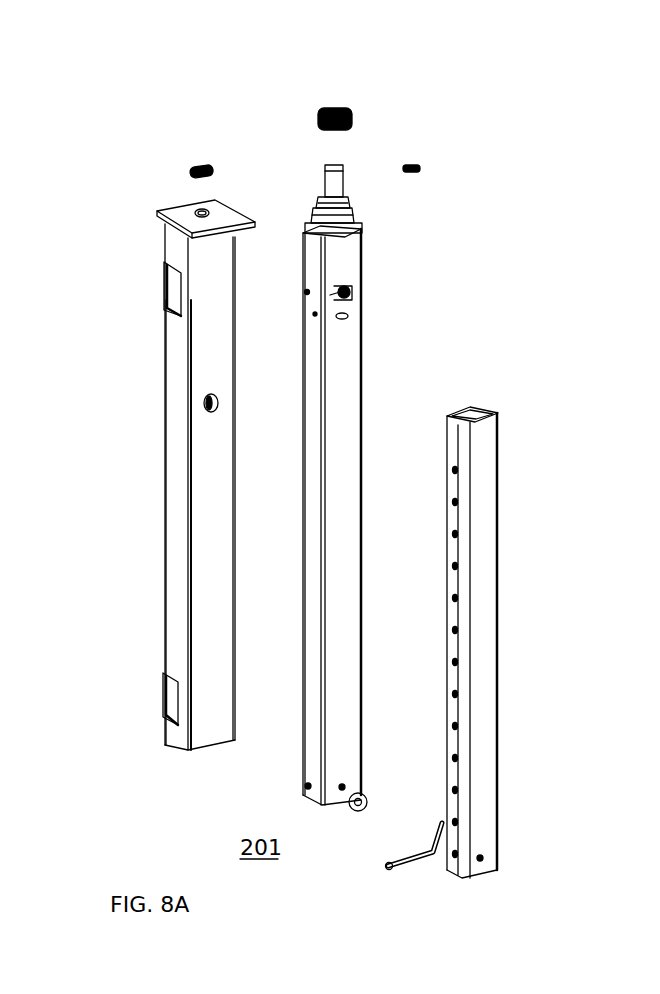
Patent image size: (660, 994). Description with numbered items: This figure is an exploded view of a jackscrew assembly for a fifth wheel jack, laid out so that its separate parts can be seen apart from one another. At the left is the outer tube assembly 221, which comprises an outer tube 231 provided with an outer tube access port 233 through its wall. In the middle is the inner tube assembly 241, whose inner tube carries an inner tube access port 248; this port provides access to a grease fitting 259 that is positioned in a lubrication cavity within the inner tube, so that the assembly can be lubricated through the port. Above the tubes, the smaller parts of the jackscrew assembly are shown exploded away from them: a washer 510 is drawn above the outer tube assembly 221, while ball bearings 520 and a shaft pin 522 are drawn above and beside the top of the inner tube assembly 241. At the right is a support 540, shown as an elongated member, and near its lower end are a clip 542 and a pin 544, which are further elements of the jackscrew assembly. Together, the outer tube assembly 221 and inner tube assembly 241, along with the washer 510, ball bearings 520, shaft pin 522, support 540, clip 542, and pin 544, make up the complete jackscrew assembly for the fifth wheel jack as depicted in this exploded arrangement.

The outer tube assembly 221 is at (172, 620).
The outer tube 231 is at (188, 412).
The outer tube access port 233 is at (206, 410).
The inner tube assembly 241 is at (360, 355).
The inner tube access port 248 is at (350, 290).
The grease fitting 259 is at (342, 300).
The washer 510 is at (190, 168).
The ball bearings 520 is at (355, 105).
The shaft pin 522 is at (412, 168).
The support 540 is at (485, 540).
The clip 542 is at (442, 825).
The pin 544 is at (462, 836).